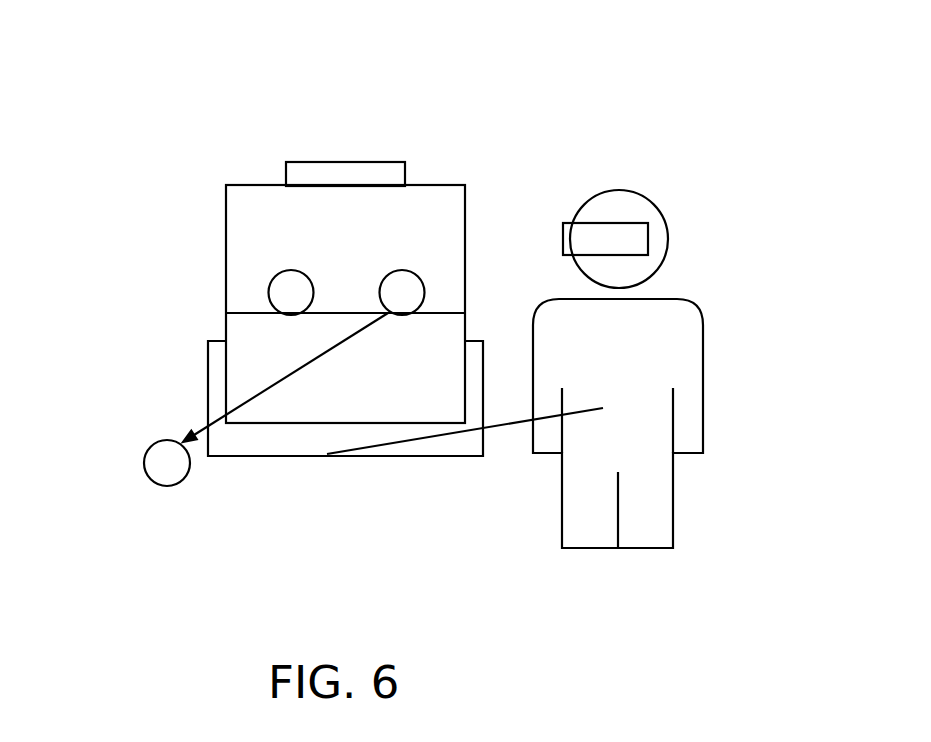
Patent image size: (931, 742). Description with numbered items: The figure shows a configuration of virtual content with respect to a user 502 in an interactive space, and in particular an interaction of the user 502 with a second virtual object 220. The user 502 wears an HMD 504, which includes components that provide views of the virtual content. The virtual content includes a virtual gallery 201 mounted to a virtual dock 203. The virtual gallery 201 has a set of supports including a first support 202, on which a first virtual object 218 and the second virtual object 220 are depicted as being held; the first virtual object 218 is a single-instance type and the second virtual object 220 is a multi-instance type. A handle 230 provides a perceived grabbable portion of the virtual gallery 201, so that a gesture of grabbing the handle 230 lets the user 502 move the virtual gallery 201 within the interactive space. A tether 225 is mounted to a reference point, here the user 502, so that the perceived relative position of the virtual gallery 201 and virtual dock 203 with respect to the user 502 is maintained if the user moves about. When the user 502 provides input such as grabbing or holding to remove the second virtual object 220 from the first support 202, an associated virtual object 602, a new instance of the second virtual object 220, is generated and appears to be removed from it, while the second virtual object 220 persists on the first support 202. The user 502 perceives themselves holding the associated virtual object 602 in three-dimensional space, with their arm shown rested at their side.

The virtual gallery 201 is at (176, 203).
The first support 202 is at (443, 312).
The virtual dock 203 is at (208, 371).
The first virtual object 218 is at (285, 270).
The second virtual object 220 is at (389, 270).
The tether 225 is at (512, 430).
The handle 230 is at (342, 161).
The user 502 is at (675, 322).
The HMD 504 is at (600, 223).
The associated virtual object 602 is at (167, 487).